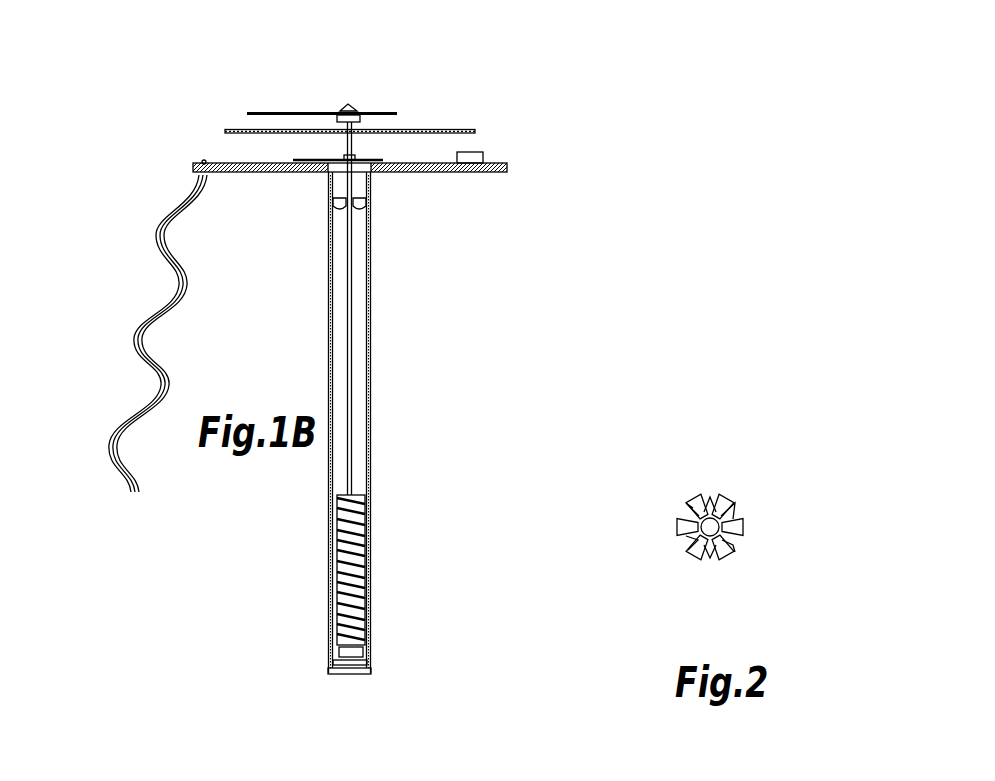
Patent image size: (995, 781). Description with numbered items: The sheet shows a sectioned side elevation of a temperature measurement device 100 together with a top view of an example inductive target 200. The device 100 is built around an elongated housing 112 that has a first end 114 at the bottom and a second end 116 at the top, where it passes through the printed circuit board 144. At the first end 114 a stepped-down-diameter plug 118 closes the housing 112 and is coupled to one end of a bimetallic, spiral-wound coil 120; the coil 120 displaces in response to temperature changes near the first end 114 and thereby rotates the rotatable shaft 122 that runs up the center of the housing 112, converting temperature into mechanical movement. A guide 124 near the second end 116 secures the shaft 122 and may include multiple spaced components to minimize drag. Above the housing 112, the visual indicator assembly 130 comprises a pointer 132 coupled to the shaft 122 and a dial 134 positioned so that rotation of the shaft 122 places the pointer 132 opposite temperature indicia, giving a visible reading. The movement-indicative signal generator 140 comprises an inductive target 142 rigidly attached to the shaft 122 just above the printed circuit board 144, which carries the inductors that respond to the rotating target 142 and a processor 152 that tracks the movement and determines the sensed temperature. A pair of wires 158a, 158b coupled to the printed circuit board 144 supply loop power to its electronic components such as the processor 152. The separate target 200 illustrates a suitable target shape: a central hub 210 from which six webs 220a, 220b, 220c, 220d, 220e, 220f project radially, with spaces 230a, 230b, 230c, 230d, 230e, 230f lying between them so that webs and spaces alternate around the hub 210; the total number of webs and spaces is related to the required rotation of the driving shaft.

In FIG. 1B, the temperature measurement device 100 is at (200, 90).
In FIG. 1B, the elongated housing 112 is at (372, 378).
In FIG. 1B, the first end 114 is at (385, 669).
In FIG. 1B, the second end 116 is at (391, 183).
In FIG. 1B, the stepped-down-diameter plug 118 is at (350, 675).
In FIG. 1B, the bimetallic, spiral-wound coil 120 is at (360, 560).
In FIG. 1B, the rotatable shaft 122 is at (352, 300).
In FIG. 1B, the guide 124 is at (368, 210).
In FIG. 1B, the visual indicator assembly 130 is at (271, 105).
In FIG. 1B, the pointer 132 is at (308, 112).
In FIG. 1B, the dial 134 is at (427, 130).
In FIG. 1B, the movement-indicative signal generator 140 is at (304, 182).
In FIG. 1B, the inductive target 142 is at (295, 160).
In FIG. 1B, the printed circuit board 144 is at (508, 167).
In FIG. 1B, the processor 152 is at (477, 152).
In FIG. 1B, the wire 158a is at (138, 340).
In FIG. 1B, the wire 158b is at (184, 285).
In FIG. 2, the inductive target 200 is at (752, 463).
In FIG. 2, the hub 210 is at (720, 520).
In FIG. 2, the web 220a is at (722, 512).
In FIG. 2, the web 220b is at (745, 530).
In FIG. 2, the web 220c is at (725, 560).
In FIG. 2, the web 220d is at (690, 545).
In FIG. 2, the web 220e is at (677, 522).
In FIG. 2, the web 220f is at (698, 500).
In FIG. 2, the space 230a is at (747, 516).
In FIG. 2, the space 230b is at (737, 546).
In FIG. 2, the space 230c is at (708, 561).
In FIG. 2, the space 230d is at (684, 542).
In FIG. 2, the space 230e is at (681, 508).
In FIG. 2, the space 230f is at (710, 495).